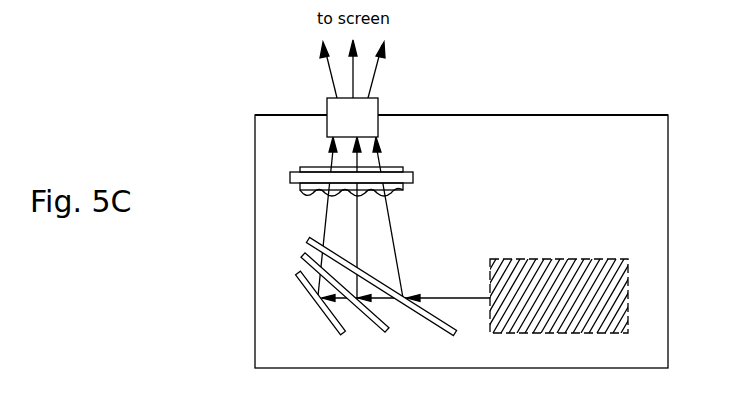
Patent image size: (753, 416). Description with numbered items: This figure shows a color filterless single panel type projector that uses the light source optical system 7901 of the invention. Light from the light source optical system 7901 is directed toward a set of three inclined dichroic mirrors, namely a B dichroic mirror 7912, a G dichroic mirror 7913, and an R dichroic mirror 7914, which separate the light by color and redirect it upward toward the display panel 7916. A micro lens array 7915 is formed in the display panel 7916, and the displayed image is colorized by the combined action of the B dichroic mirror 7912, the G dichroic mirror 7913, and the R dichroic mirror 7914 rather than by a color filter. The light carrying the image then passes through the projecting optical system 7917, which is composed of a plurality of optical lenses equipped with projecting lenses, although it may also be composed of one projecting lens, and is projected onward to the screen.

The light source optical system 7901 is at (572, 288).
The B dichroic mirror 7912 is at (264, 288).
The G dichroic mirror 7913 is at (286, 274).
The R dichroic mirror 7914 is at (320, 264).
The micro lens array 7915 is at (283, 177).
The display panel 7916 is at (294, 154).
The projecting optical system 7917 is at (390, 100).